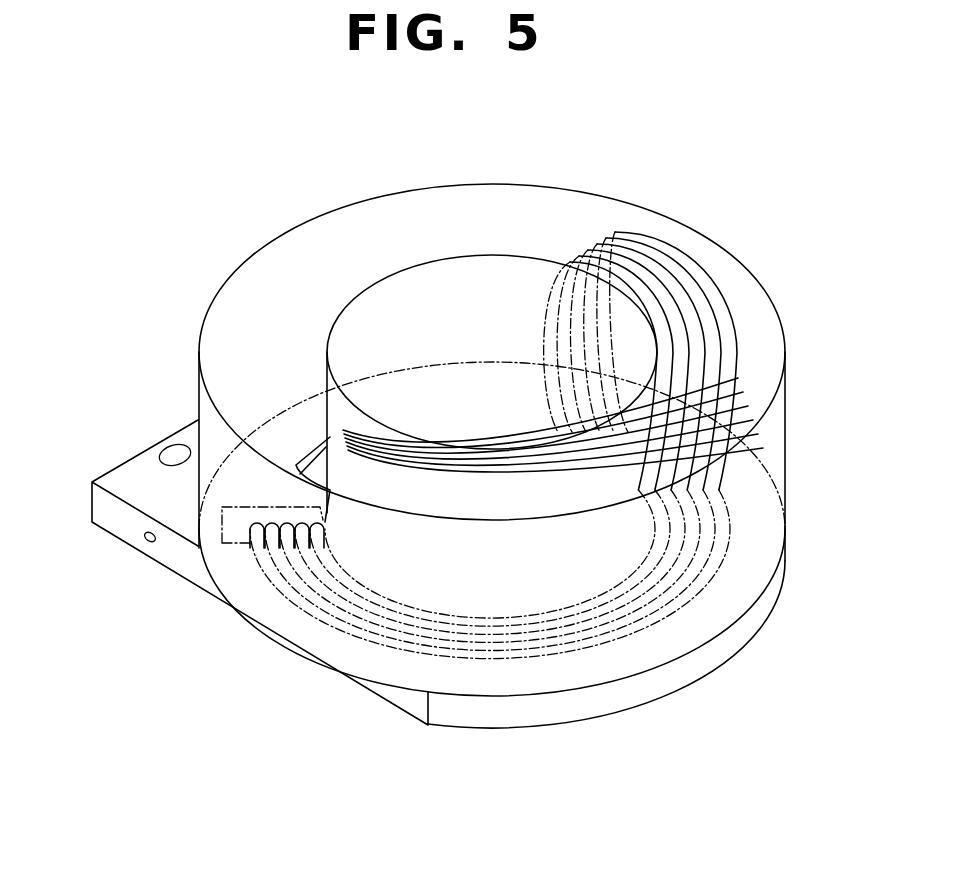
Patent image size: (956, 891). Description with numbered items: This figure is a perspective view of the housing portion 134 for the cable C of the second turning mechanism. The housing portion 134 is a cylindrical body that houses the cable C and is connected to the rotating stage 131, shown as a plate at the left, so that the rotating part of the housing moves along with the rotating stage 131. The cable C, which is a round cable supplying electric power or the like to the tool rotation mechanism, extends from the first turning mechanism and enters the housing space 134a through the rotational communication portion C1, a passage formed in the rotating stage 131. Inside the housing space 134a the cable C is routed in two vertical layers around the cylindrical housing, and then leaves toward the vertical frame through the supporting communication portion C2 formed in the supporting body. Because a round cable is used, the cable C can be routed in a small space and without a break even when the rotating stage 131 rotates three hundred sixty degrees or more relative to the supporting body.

The housing portion 134 is at (558, 190).
The housing space 134a is at (278, 265).
The rotating stage 131 is at (140, 475).
The cable C is at (697, 285).
The rotational communication portion C1 is at (242, 530).
The supporting communication portion C2 is at (347, 417).